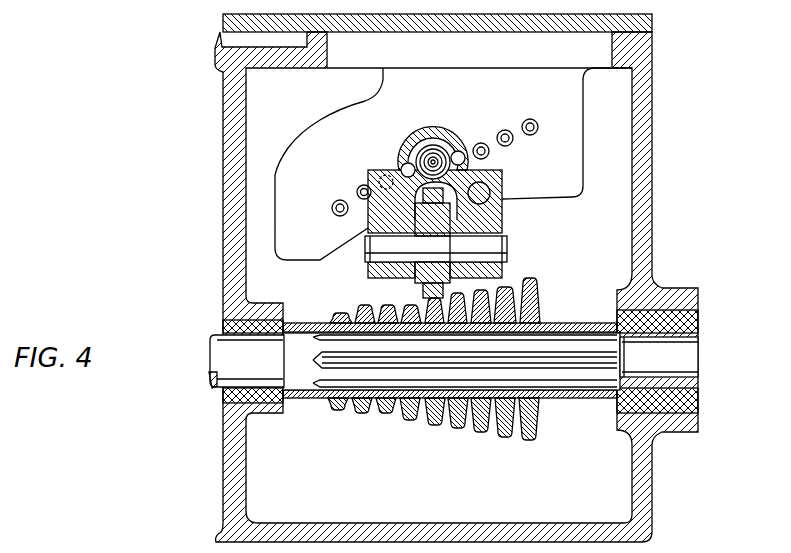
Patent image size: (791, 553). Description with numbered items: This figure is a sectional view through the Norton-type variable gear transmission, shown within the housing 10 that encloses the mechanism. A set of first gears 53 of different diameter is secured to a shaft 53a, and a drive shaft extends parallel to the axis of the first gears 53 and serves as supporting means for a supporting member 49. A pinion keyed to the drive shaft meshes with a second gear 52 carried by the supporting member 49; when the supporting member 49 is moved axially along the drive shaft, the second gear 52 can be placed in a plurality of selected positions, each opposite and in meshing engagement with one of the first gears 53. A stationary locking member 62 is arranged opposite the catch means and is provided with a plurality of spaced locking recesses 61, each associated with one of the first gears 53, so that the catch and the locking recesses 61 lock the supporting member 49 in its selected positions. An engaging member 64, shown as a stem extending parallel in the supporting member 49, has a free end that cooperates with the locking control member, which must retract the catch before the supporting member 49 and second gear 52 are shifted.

The housing 10 is at (638, 128).
The supporting member 49 is at (503, 226).
The second gear 52 is at (420, 288).
The first gears 53 is at (383, 413).
The shaft 53a is at (308, 383).
The locking recesses 61 is at (359, 186).
The stationary locking member 62 is at (554, 97).
The engaging member 64 is at (491, 194).